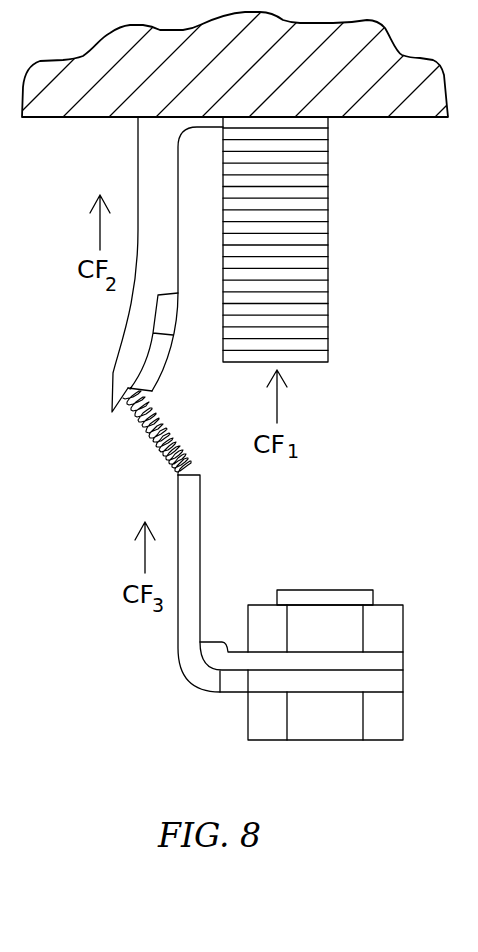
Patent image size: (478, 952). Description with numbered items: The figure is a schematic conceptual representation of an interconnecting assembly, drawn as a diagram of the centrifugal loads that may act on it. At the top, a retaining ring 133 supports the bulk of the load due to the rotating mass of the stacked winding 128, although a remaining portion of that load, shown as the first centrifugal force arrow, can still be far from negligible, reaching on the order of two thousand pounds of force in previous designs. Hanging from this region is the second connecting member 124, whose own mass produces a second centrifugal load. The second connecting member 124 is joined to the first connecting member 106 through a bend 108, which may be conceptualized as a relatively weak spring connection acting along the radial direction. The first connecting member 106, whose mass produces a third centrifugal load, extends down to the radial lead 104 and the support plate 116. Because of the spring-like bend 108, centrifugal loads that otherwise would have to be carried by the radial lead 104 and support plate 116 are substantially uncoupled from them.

The retaining ring 133 is at (368, 118).
The stacked winding 128 is at (328, 218).
The second connecting member 124 is at (137, 154).
The bend 108 is at (172, 418).
The first connecting member 106 is at (200, 532).
The support plate 116 is at (210, 637).
The radial lead 104 is at (335, 590).